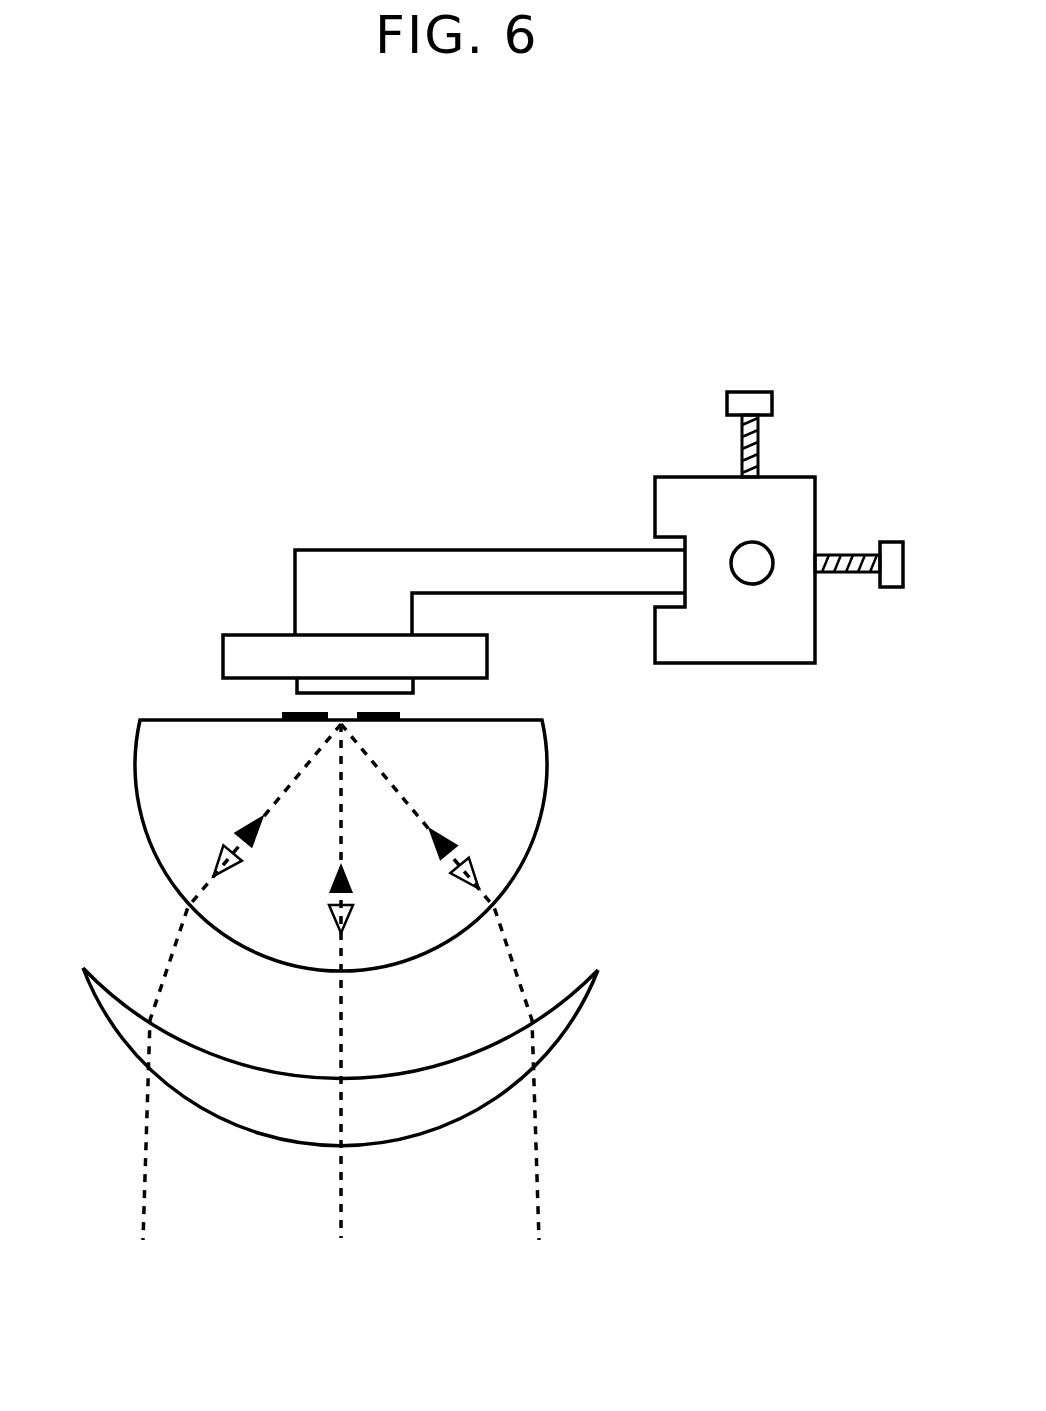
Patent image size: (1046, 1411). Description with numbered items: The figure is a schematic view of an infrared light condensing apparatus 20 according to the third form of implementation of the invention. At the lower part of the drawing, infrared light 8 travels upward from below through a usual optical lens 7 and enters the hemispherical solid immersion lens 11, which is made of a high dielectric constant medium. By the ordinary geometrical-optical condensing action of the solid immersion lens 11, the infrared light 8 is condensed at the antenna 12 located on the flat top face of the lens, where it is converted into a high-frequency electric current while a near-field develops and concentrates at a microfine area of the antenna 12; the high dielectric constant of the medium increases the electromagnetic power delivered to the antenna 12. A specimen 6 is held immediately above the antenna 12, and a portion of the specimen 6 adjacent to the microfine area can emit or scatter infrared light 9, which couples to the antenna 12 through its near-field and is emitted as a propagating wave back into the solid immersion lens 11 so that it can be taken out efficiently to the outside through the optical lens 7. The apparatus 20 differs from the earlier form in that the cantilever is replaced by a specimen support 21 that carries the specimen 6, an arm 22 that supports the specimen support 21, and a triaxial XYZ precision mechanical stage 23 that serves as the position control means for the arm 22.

The specimen 6 is at (292, 683).
The optical lens 7 is at (567, 1021).
The infrared light 8 is at (240, 832).
The infrared light 9 is at (210, 872).
The solid immersion lens 11 is at (520, 780).
The antenna 12 is at (283, 714).
The infrared light condensing apparatus 20 is at (337, 348).
The specimen support 21 is at (258, 648).
The arm 22 is at (568, 558).
The triaxial XYZ precision mechanical stage 23 is at (768, 706).